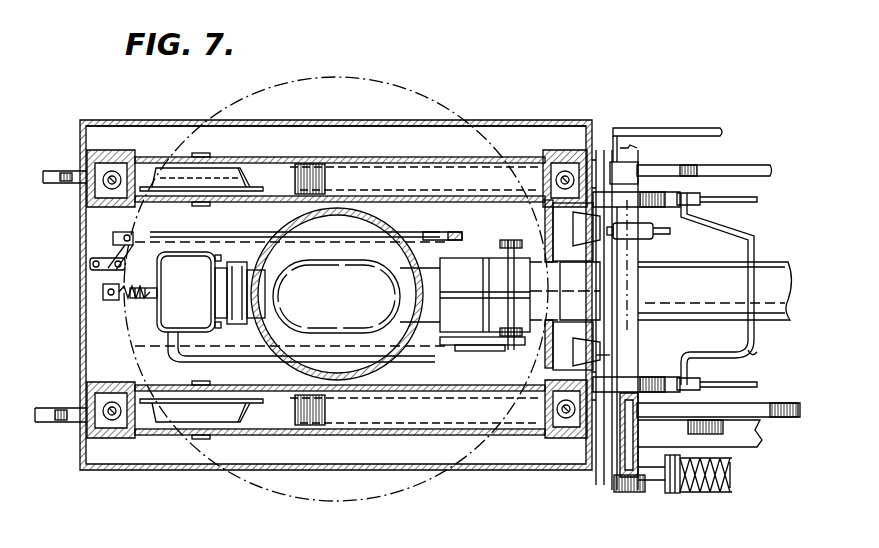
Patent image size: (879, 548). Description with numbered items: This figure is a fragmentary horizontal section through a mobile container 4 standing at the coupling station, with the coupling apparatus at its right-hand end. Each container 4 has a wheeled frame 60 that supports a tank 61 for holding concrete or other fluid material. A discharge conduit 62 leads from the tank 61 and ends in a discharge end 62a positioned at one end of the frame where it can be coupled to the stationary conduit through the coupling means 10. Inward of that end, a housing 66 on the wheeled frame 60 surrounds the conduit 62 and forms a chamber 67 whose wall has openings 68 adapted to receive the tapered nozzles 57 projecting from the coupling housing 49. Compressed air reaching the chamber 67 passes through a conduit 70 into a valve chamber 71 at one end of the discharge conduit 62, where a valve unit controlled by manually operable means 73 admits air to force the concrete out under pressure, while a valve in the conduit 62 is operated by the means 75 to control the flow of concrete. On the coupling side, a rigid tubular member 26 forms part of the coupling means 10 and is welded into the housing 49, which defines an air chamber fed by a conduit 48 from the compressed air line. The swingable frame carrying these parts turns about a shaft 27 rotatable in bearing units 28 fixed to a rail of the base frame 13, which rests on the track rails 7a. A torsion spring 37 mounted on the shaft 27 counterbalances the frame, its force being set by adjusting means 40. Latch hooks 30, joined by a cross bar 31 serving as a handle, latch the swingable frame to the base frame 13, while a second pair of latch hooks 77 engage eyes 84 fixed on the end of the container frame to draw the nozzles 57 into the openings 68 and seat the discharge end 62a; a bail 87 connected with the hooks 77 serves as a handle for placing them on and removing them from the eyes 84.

The mobile container 4 is at (538, 110).
The wheeled frame 60 is at (472, 119).
The tank 61 is at (401, 91).
The manually operable means 73 is at (152, 234).
The valve chamber 71 is at (188, 304).
The discharge conduit 62 is at (292, 294).
The discharge end 62a is at (565, 291).
The conduit 70 is at (210, 350).
The valve operating means 75 is at (505, 242).
The housing 66 is at (545, 222).
The chamber 67 is at (582, 340).
The tapered nozzles 57 is at (580, 238).
The eyes 84 is at (603, 167).
The housing 49 is at (633, 338).
The bearing units 28 is at (618, 480).
The shaft 27 is at (654, 478).
The cross bar 31 is at (697, 130).
The latch hooks 30 is at (630, 148).
The track rails 7a is at (752, 170).
The latch hooks 77 is at (665, 198).
The bail 87 is at (755, 246).
The coupling means 10 is at (673, 263).
The tubular member 26 is at (704, 300).
The conduit 48 is at (758, 355).
The openings 68 is at (598, 357).
The base frame 13 is at (752, 450).
The torsion spring 37 is at (722, 492).
The adjusting means 40 is at (672, 496).